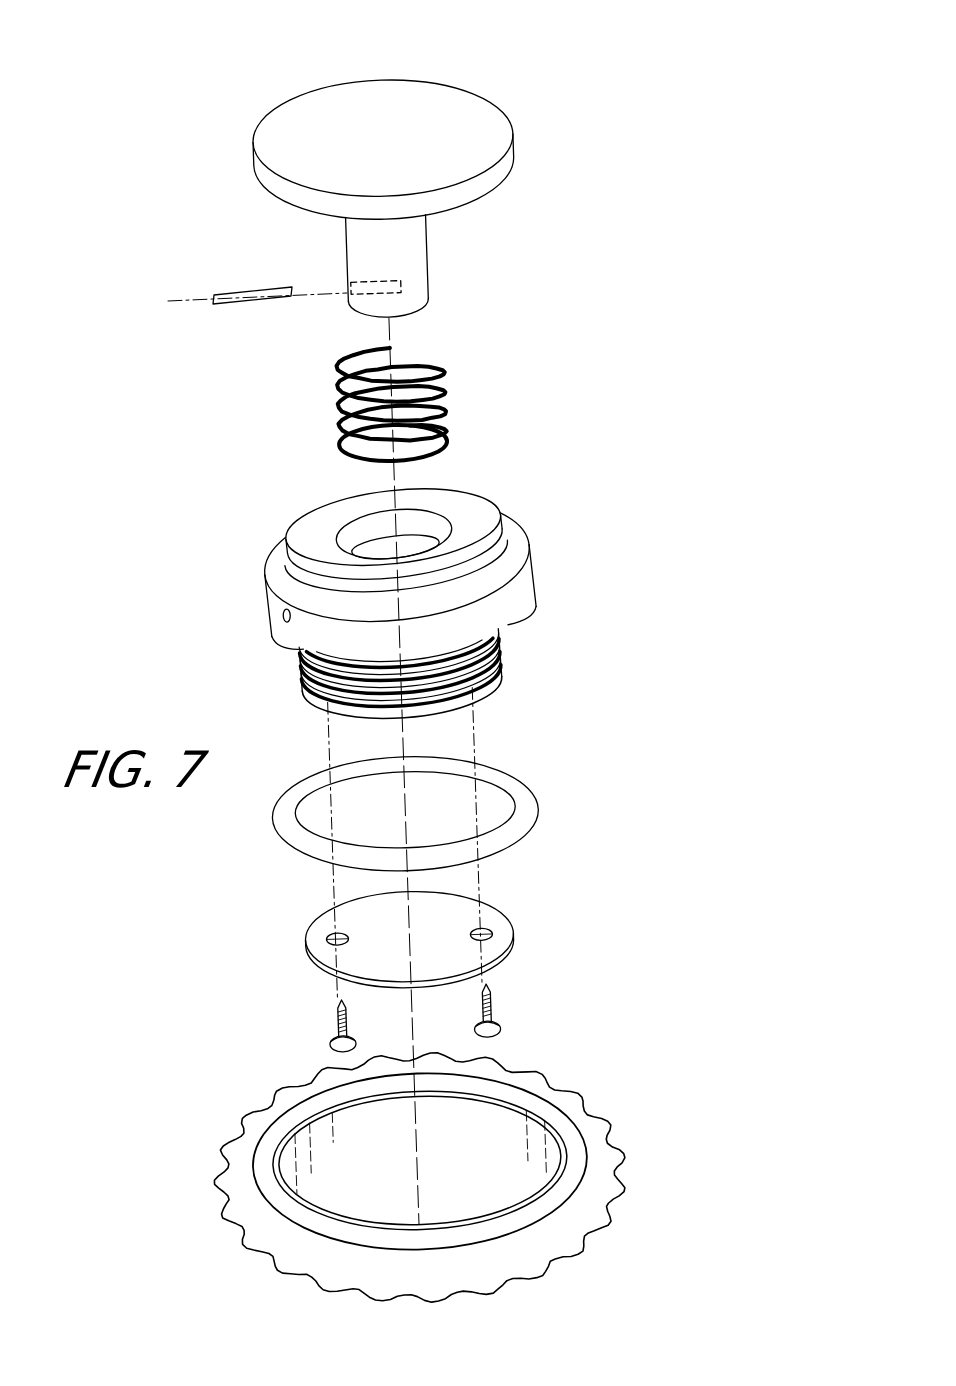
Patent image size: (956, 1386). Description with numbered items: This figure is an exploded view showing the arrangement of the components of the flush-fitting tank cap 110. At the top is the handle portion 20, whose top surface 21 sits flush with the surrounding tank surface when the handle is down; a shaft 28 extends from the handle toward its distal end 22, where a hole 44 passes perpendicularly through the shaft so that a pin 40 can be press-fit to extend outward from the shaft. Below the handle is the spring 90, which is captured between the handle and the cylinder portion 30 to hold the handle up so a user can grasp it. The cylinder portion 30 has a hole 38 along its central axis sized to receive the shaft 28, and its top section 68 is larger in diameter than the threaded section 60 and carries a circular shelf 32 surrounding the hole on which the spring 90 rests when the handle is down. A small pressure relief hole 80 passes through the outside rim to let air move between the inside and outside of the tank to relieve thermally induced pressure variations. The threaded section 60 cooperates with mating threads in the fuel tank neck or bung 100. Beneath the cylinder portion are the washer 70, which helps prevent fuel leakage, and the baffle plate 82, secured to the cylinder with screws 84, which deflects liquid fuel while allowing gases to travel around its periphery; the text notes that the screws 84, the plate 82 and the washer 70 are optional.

The flush-fitting tank cap 110 is at (618, 180).
The handle portion 20 is at (266, 80).
The top surface of the handle 21 is at (450, 137).
The shaft section 28 is at (428, 257).
The distal end of the shaft 22 is at (418, 312).
The hole in the shaft 44 is at (344, 296).
The pin 40 is at (243, 275).
The spring 90 is at (460, 380).
The cylinder portion 30 is at (530, 641).
The circular shelf 32 is at (367, 547).
The hole 38 is at (413, 552).
The top section 68 is at (521, 595).
The pressure relief hole 80 is at (281, 616).
The threaded section 60 is at (488, 676).
The washer 70 is at (520, 805).
The baffle plate 82 is at (457, 957).
The screws 84 is at (493, 1017).
The fuel tank neck or bung 100 is at (493, 1284).